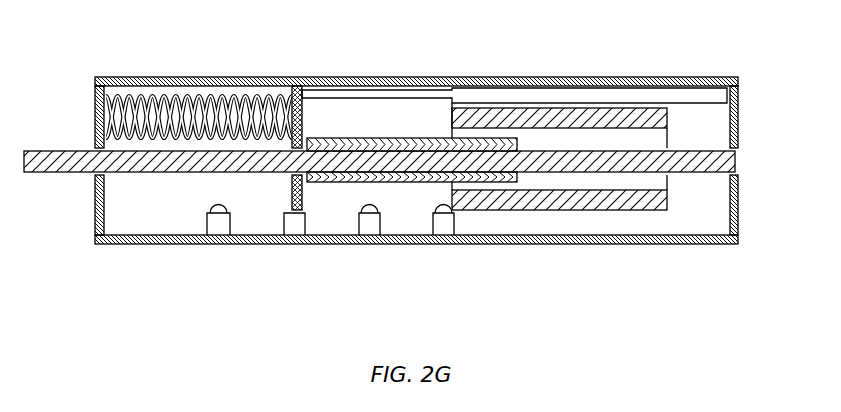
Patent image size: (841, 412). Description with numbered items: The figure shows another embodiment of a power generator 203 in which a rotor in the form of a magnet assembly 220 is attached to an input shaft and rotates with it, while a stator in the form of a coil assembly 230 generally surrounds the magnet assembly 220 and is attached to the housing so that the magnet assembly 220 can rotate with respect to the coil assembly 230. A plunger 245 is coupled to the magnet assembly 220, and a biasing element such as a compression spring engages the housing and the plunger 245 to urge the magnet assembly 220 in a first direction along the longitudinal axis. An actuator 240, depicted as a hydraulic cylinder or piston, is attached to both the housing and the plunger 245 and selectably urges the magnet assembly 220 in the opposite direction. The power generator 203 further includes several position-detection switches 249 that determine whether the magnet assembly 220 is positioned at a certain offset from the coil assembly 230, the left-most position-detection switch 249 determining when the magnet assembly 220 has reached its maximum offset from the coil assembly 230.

The power generator 203 is at (431, 44).
The magnet assembly 220 is at (389, 176).
The coil assembly 230 is at (513, 200).
The actuator 240 is at (585, 95).
The plunger 245 is at (302, 85).
The position-detection switch 249 is at (218, 229).